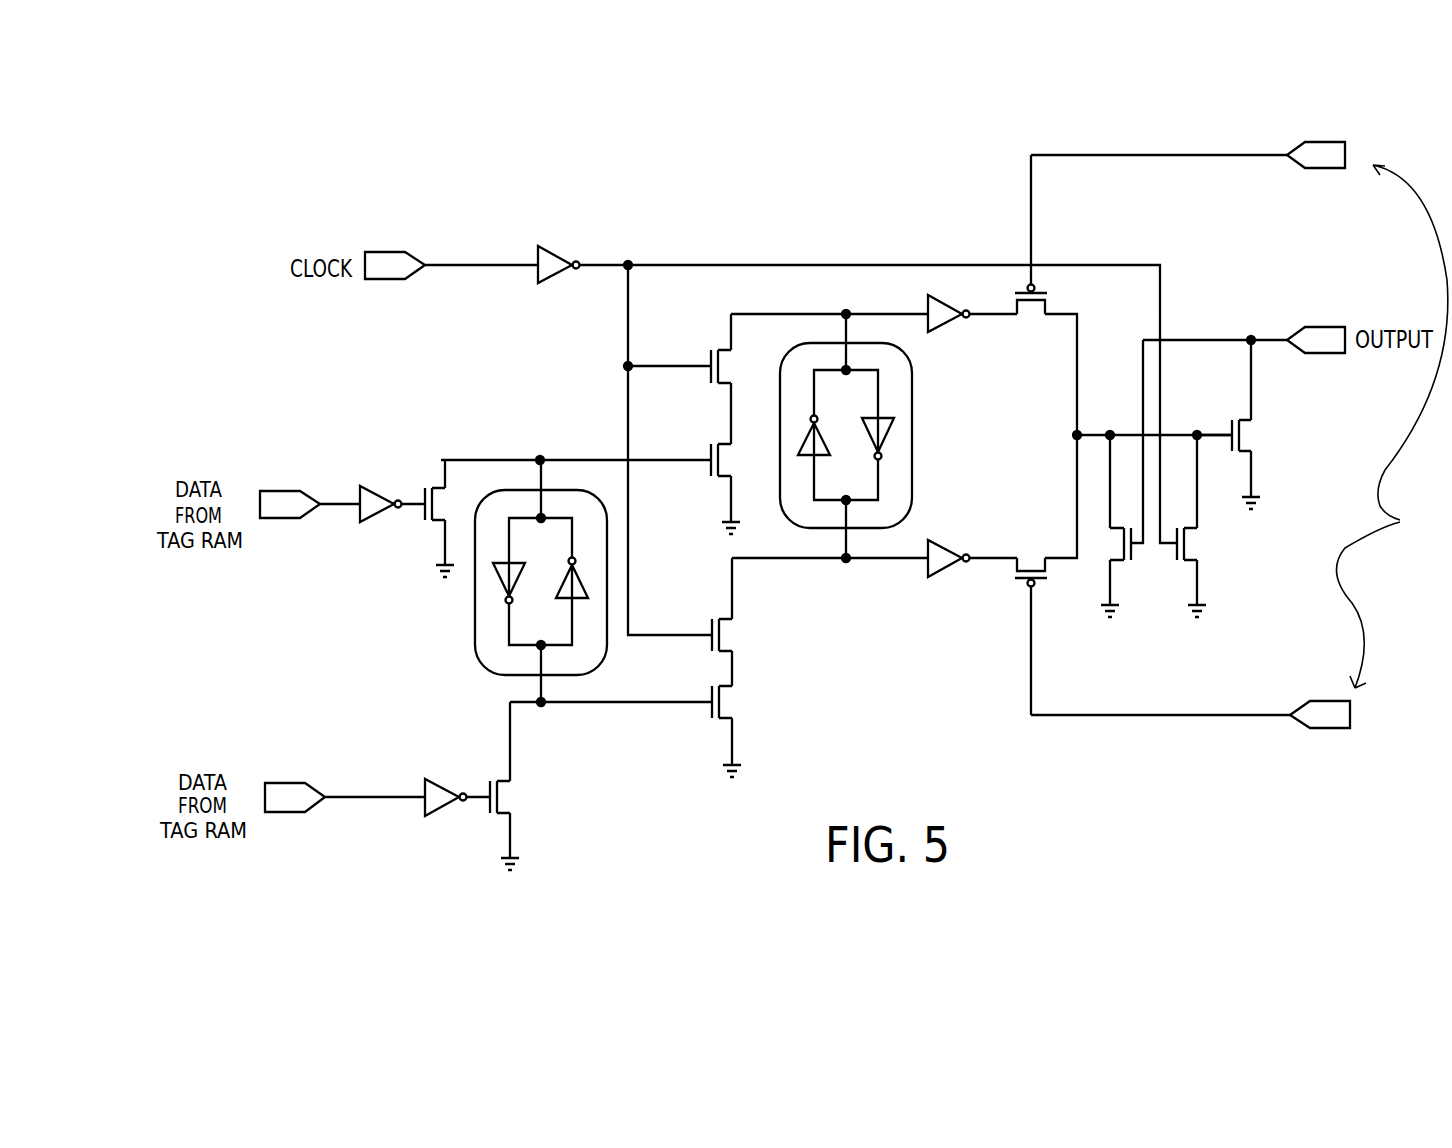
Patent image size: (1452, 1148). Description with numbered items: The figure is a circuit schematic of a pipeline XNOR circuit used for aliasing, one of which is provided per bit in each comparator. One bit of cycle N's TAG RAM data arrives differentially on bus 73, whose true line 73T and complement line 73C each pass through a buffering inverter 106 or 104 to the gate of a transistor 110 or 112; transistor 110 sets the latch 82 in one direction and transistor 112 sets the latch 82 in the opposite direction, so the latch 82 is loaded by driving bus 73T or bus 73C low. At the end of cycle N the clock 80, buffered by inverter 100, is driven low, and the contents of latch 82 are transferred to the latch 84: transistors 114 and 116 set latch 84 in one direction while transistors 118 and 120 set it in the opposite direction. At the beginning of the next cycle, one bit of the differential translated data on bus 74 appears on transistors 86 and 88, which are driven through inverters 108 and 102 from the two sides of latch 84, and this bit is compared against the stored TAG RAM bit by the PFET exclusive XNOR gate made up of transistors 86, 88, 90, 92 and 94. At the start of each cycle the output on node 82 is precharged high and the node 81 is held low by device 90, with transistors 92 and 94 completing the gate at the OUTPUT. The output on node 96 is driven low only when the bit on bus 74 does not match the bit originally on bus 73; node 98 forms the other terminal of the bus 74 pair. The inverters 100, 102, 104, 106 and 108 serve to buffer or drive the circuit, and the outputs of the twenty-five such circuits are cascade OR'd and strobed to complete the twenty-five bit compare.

The bus 73 is at (292, 766).
The true bus 73T is at (334, 500).
The complement bus 73C is at (370, 799).
The bus 74 is at (1391, 426).
The clock 80 is at (388, 280).
The node 81 is at (1220, 432).
The latch 82 is at (1325, 327).
The latch 84 is at (919, 434).
The transistor 86 is at (1045, 292).
The transistor 88 is at (1025, 587).
The device 90 is at (1133, 554).
The transistor 92 is at (1195, 550).
The transistor 94 is at (1250, 431).
The output node 96 is at (1323, 168).
The terminal 98 is at (1330, 728).
The inverter 100 is at (557, 284).
The inverter 102 is at (950, 574).
The inverter 104 is at (441, 818).
The inverter 106 is at (387, 483).
The inverter 108 is at (950, 332).
The transistor 110 is at (428, 522).
The transistor 112 is at (481, 784).
The transistor 114 is at (709, 352).
The transistor 116 is at (709, 474).
The transistor 118 is at (709, 645).
The transistor 120 is at (709, 712).